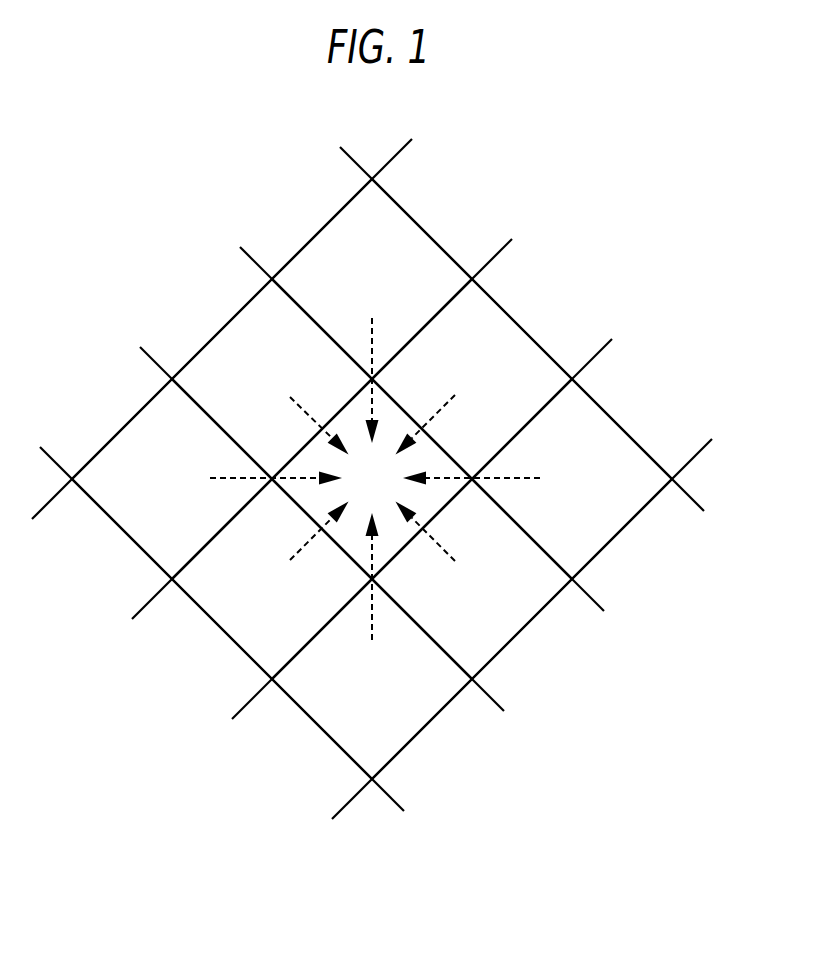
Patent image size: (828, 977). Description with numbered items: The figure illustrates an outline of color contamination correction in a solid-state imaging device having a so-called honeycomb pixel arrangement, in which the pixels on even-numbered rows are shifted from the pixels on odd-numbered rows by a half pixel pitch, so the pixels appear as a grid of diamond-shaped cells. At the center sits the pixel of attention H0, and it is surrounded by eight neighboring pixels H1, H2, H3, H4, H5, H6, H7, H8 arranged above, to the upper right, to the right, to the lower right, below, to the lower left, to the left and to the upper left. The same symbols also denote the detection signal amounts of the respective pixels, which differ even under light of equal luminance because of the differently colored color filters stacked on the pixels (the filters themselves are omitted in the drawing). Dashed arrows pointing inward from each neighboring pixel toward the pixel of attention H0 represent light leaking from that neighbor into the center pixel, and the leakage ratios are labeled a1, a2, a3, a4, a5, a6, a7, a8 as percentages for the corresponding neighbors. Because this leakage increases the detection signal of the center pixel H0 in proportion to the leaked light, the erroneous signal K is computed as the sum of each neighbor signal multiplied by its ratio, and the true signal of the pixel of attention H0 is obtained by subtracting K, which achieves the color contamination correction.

The pixel of attention H0 is at (372, 479).
The neighboring pixel H1 is at (372, 279).
The neighboring pixel H2 is at (472, 379).
The neighboring pixel H3 is at (572, 479).
The neighboring pixel H4 is at (472, 579).
The neighboring pixel H5 is at (372, 679).
The neighboring pixel H6 is at (272, 579).
The neighboring pixel H7 is at (172, 479).
The neighboring pixel H8 is at (272, 379).
The light leakage ratio a1 is at (373, 335).
The light leakage ratio a2 is at (446, 409).
The light leakage ratio a3 is at (528, 481).
The light leakage ratio a4 is at (446, 548).
The light leakage ratio a5 is at (373, 617).
The light leakage ratio a6 is at (305, 543).
The light leakage ratio a7 is at (224, 481).
The light leakage ratio a8 is at (301, 405).